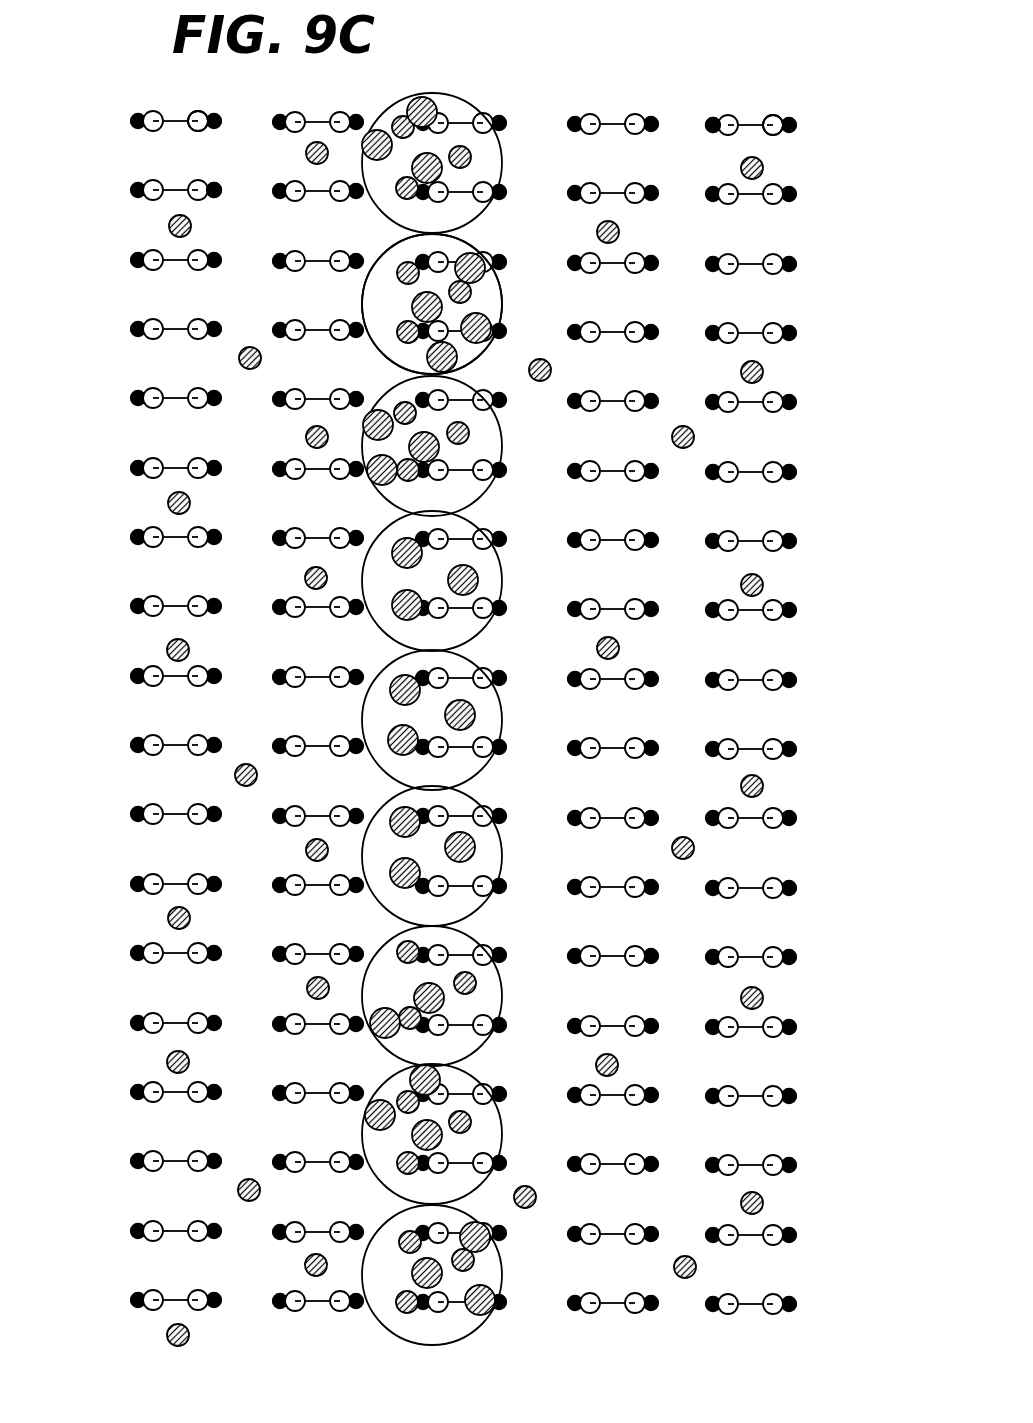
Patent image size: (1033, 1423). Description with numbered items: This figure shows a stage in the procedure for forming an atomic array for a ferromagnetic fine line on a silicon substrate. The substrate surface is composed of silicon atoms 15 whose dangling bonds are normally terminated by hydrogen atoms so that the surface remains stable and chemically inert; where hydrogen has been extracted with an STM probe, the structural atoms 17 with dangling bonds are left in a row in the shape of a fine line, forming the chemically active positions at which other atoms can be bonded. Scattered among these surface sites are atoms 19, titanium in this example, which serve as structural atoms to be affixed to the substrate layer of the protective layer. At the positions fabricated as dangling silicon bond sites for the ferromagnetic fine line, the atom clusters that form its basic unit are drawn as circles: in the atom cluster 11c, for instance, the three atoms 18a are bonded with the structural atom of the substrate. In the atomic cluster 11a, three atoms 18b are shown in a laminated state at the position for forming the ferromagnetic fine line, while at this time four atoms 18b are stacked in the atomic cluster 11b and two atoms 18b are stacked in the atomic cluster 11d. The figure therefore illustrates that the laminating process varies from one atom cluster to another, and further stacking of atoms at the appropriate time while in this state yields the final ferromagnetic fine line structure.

The atomic cluster 11a is at (402, 96).
The atomic cluster 11b is at (362, 303).
The atom cluster 11c is at (390, 525).
The atomic cluster 11d is at (388, 942).
The silicon atoms 15 is at (214, 182).
The structural atoms 17 is at (200, 132).
The three atoms of the atom cluster 18a is at (403, 614).
The laminated atoms 18b is at (430, 153).
The atom 19 is at (763, 165).